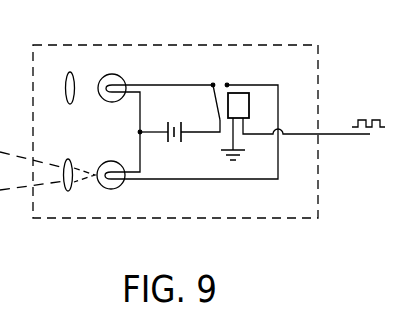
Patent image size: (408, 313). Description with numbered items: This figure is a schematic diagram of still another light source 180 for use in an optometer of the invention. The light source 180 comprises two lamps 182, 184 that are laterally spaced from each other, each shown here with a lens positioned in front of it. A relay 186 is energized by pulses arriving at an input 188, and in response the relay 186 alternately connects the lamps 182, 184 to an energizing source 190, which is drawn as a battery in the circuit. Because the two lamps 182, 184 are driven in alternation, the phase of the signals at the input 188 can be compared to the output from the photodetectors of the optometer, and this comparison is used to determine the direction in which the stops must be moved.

The light source 180 is at (212, 45).
The lamp 182 is at (115, 75).
The lamp 184 is at (114, 189).
The relay 186 is at (250, 100).
The input 188 is at (335, 136).
The energizing source 190 is at (180, 144).